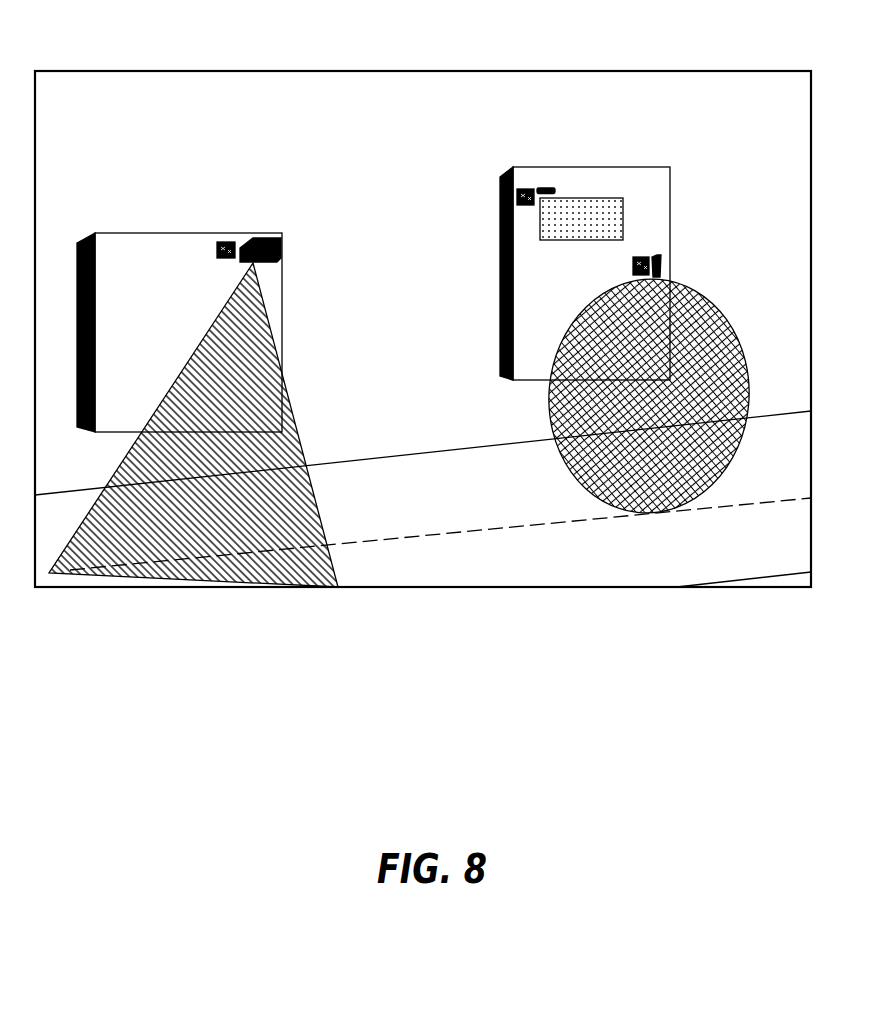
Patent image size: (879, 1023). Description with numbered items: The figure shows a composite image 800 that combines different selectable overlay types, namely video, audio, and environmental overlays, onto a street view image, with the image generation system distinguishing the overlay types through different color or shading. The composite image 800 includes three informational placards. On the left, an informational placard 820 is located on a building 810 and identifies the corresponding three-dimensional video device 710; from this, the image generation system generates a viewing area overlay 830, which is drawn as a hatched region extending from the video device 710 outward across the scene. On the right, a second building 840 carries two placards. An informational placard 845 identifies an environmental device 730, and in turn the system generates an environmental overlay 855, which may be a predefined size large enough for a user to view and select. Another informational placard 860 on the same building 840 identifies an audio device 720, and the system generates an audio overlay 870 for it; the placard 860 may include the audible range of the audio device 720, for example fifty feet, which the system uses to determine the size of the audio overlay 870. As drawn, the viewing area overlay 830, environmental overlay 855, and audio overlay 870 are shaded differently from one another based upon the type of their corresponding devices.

The composite image 800 is at (423, 303).
The building 810 is at (179, 310).
The informational placard 820 is at (205, 212).
The 3D video device 710 is at (194, 288).
The viewing area overlay 830 is at (220, 425).
The building 840 is at (563, 247).
The informational placard 845 is at (502, 185).
The environmental device 730 is at (640, 158).
The environmental overlay 855 is at (497, 236).
The informational placard 860 is at (611, 269).
The audio device 720 is at (691, 251).
The audio overlay 870 is at (588, 396).